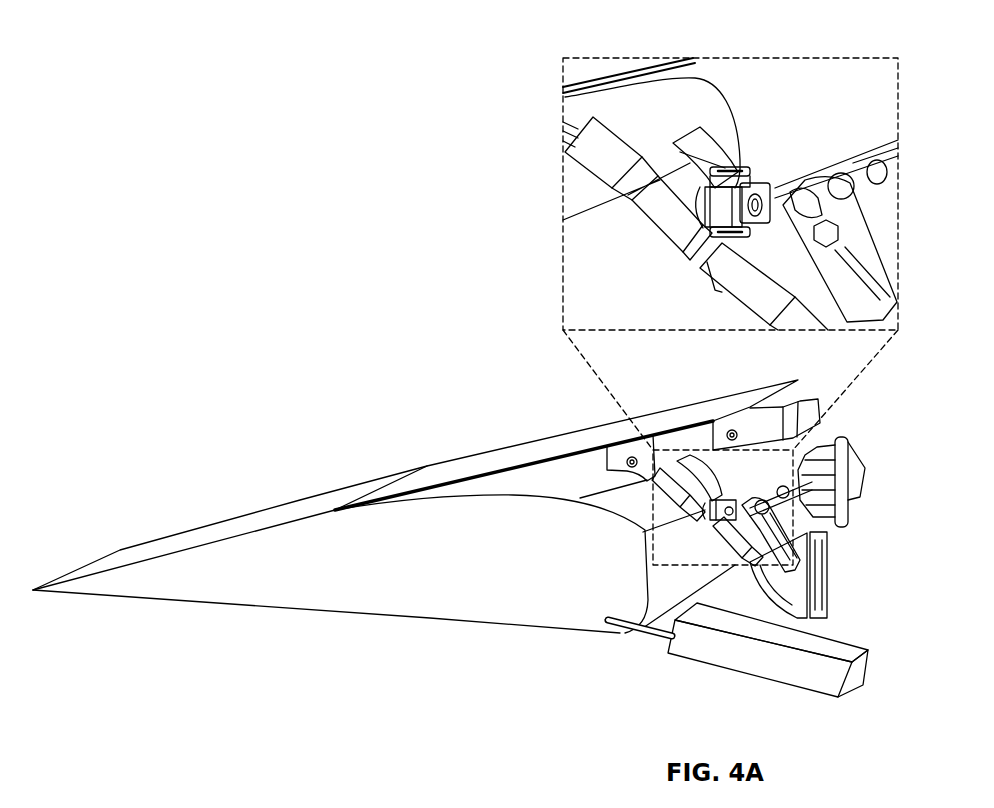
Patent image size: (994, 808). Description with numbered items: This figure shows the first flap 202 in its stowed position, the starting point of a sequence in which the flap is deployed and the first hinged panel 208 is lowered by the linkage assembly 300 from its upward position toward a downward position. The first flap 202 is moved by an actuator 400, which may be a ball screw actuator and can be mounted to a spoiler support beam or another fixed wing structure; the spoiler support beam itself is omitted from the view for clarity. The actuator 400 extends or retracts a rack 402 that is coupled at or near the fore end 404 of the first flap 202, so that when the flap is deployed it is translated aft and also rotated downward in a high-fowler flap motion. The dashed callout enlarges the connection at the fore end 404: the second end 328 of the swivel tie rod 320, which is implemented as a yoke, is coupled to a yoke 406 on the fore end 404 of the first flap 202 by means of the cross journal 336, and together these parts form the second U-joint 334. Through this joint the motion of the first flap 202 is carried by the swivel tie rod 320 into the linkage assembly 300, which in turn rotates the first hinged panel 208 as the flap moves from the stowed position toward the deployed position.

The first flap 202 is at (248, 520).
The first hinged panel 208 is at (568, 443).
The linkage assembly 300 is at (845, 424).
The swivel tie rod 320 is at (842, 158).
The second end 328 is at (770, 183).
The second U-joint 334 is at (774, 179).
The cross journal 336 is at (683, 235).
The actuator 400 is at (768, 672).
The rack 402 is at (650, 633).
The fore end 404 is at (647, 532).
The yoke 406 is at (712, 177).